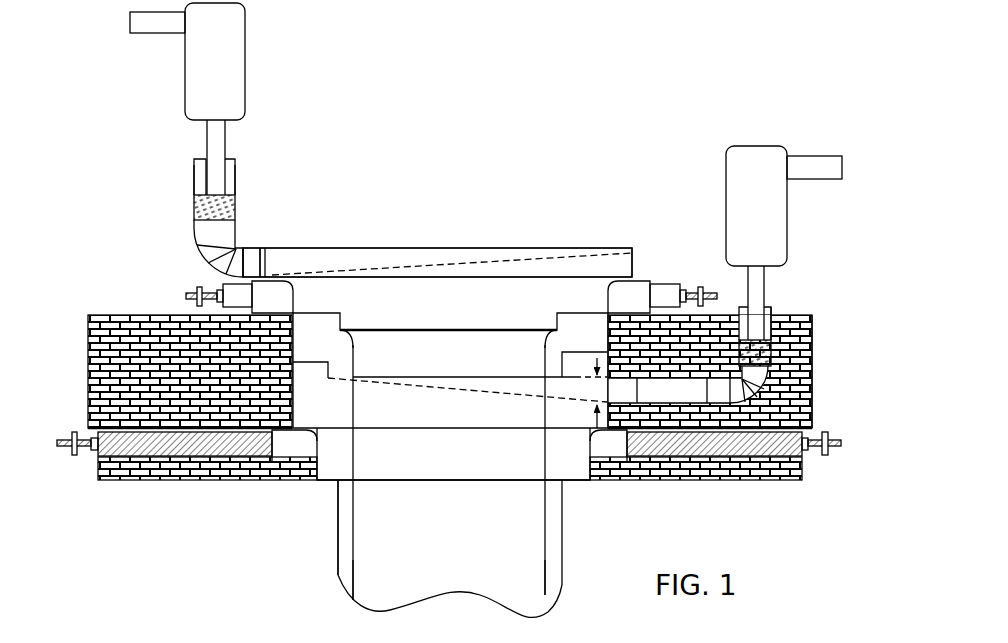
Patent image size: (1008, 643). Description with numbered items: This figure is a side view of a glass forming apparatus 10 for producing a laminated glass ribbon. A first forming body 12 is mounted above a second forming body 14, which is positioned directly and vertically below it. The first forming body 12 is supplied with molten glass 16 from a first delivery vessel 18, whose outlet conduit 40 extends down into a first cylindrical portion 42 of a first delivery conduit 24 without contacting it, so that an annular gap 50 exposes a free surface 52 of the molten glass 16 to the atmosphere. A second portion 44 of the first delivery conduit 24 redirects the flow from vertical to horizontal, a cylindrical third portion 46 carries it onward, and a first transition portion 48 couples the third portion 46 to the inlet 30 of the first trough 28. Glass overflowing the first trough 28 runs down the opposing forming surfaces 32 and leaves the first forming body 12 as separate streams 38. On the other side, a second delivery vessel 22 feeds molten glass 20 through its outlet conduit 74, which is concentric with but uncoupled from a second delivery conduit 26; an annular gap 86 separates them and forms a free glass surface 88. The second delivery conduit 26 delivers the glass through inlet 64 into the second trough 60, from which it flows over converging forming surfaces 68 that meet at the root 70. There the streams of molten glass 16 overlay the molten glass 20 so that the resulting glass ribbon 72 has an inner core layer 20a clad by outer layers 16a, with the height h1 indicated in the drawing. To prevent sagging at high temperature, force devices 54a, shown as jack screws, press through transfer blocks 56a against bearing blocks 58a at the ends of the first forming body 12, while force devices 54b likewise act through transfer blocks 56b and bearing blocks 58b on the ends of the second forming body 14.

The glass forming apparatus 10 is at (493, 189).
The first forming body 12 is at (537, 246).
The second forming body 14 is at (450, 396).
The molten glass 16 is at (194, 210).
The outer layer 16a is at (562, 585).
The first delivery vessel 18 is at (245, 83).
The molten glass 20 is at (771, 342).
The inner layer 20a is at (338, 580).
The second delivery vessel 22 is at (726, 170).
The first delivery conduit 24 is at (239, 186).
The second delivery conduit 26 is at (771, 310).
The first trough 28 is at (440, 262).
The inlet 30 is at (270, 268).
The forming surfaces 32 is at (423, 320).
The separate streams 38 is at (347, 356).
The first delivery vessel outlet conduit 40 is at (227, 140).
The first cylindrical portion 42 is at (194, 190).
The second portion 44 is at (212, 268).
The third portion 46 is at (245, 248).
The first transition portion 48 is at (265, 250).
The annular gap 50 is at (235, 160).
The free surface 52 is at (206, 193).
The force devices 54a is at (187, 295).
The force devices 54b is at (76, 432).
The transfer blocks 56a is at (195, 322).
The transfer blocks 56b is at (210, 452).
The bearing blocks 58a is at (291, 300).
The bearing blocks 58b is at (292, 453).
The second trough 60 is at (478, 392).
The inlet 64 is at (607, 390).
The converging forming surfaces 68 is at (405, 470).
The root 70 is at (438, 480).
The glass ribbon 72 is at (334, 550).
The outlet conduit 74 is at (768, 285).
The annular gap 86 is at (742, 307).
The free glass surface 88 is at (813, 327).
The height h1 is at (597, 419).